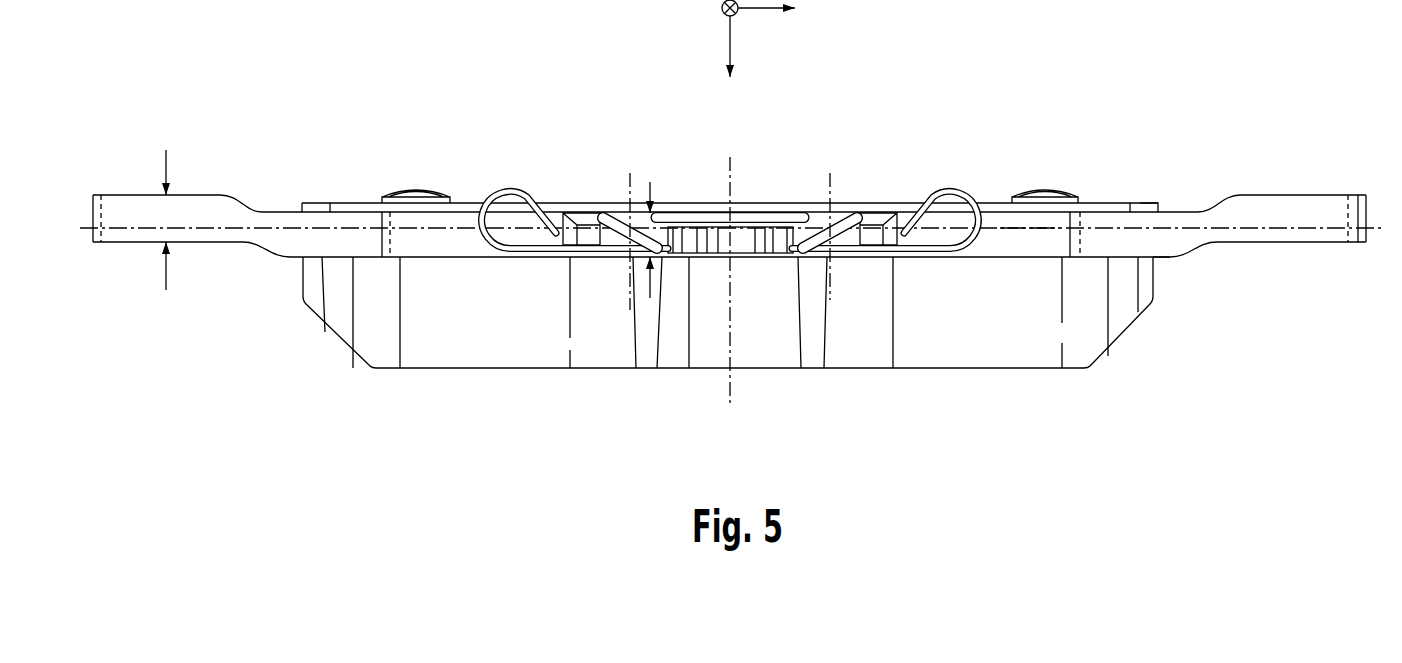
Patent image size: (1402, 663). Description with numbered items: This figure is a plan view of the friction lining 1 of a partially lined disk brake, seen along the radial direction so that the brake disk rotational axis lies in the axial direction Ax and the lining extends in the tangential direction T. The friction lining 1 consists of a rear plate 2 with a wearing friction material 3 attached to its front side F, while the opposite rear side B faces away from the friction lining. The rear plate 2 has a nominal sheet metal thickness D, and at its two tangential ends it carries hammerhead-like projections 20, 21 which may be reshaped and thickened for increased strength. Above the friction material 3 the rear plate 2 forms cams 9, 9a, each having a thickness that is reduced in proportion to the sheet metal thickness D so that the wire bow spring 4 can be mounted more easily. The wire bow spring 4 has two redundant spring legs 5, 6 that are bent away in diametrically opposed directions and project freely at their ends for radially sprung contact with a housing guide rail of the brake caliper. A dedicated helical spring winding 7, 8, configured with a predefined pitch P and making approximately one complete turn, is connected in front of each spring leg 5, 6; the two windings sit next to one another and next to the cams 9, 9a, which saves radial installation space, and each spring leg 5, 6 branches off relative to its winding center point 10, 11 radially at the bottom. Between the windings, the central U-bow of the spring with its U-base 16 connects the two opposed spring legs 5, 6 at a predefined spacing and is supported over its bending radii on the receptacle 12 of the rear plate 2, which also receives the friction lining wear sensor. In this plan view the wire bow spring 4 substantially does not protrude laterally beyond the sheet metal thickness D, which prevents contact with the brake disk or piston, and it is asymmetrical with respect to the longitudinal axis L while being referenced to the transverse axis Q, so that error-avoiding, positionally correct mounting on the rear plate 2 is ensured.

The friction lining 1 is at (263, 177).
The rear plate 2 is at (288, 237).
The friction material 3 is at (482, 337).
The wire bow spring 4 is at (733, 178).
The spring leg 5 is at (970, 218).
The spring leg 6 is at (481, 218).
The spring winding 7 is at (822, 230).
The spring winding 8 is at (633, 230).
The cam 9 is at (602, 235).
The cam 9a is at (863, 233).
The winding center point 10 is at (832, 293).
The winding center point 11 is at (630, 293).
The receptacle 12 is at (751, 247).
The U-base 16 is at (748, 213).
The projection 20 is at (1218, 218).
The projection 21 is at (216, 218).
The sheet metal thickness D is at (160, 215).
The pitch P is at (660, 212).
The transverse axis Q is at (730, 337).
The longitudinal axis L is at (1030, 227).
The rear side B is at (1180, 208).
The front side F is at (1172, 258).
The tangential direction T is at (761, 22).
The axial direction Ax is at (749, 53).